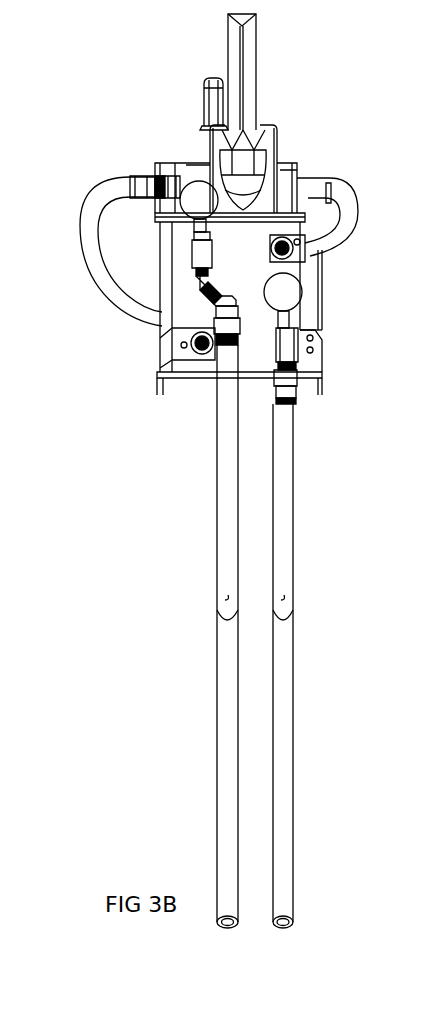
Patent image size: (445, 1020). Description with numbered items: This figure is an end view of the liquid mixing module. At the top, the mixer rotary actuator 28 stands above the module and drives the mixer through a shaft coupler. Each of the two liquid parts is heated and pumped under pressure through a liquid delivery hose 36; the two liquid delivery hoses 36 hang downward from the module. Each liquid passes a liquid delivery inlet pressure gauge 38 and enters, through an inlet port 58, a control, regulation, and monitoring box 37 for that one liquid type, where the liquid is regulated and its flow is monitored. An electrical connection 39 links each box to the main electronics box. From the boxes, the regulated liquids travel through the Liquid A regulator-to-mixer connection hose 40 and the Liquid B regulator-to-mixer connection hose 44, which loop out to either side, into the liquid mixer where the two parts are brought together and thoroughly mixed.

The mixer rotary actuator 28 is at (249, 70).
The liquid delivery hoses 36 is at (227, 557).
The control, regulation, and monitoring box for one liquid type 37 is at (168, 345).
The liquid delivery inlet pressure gauge 38 is at (200, 207).
The electrical connection to main electronics box 39 is at (200, 348).
The Liquid A regulator-to-mixer connection hose 40 is at (89, 217).
The Liquid B regulator-to-mixer connection hose 44 is at (345, 195).
The inlet port to liquid control, regulation, and monitoring box 58 is at (196, 250).